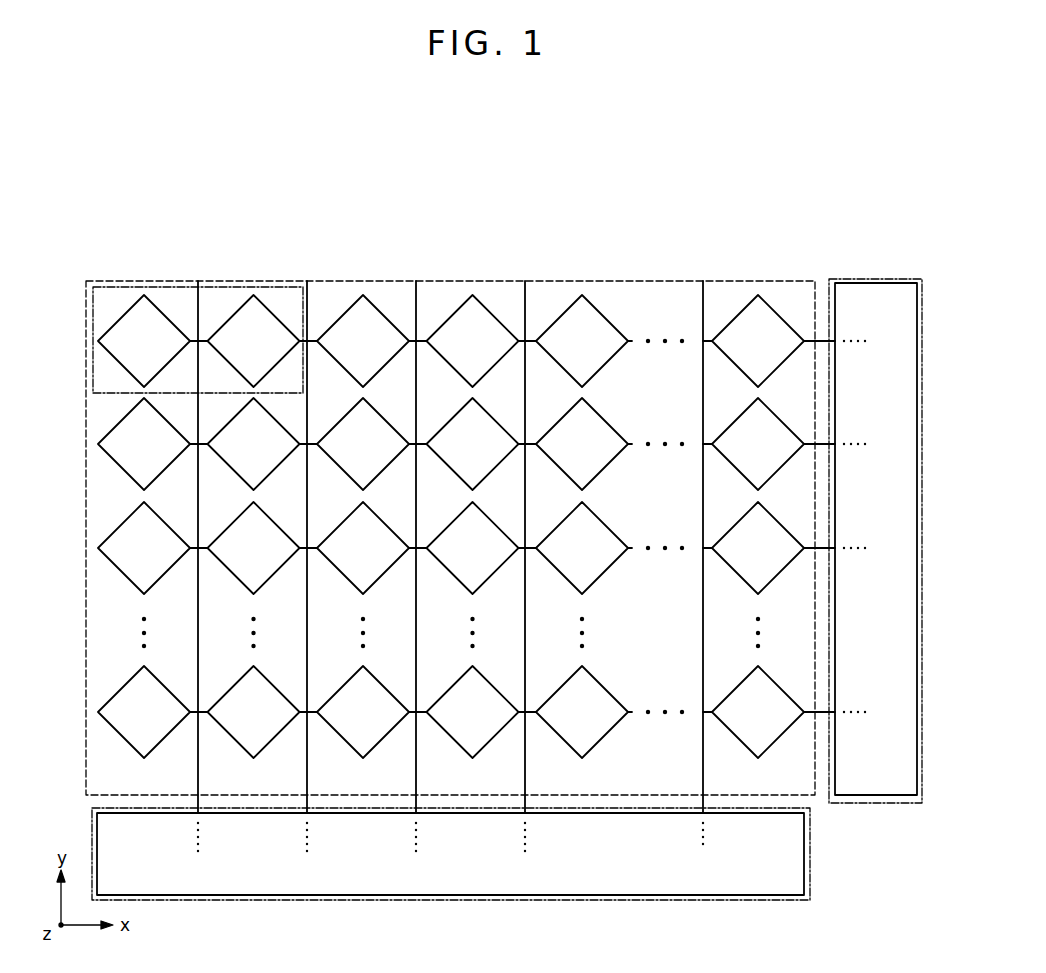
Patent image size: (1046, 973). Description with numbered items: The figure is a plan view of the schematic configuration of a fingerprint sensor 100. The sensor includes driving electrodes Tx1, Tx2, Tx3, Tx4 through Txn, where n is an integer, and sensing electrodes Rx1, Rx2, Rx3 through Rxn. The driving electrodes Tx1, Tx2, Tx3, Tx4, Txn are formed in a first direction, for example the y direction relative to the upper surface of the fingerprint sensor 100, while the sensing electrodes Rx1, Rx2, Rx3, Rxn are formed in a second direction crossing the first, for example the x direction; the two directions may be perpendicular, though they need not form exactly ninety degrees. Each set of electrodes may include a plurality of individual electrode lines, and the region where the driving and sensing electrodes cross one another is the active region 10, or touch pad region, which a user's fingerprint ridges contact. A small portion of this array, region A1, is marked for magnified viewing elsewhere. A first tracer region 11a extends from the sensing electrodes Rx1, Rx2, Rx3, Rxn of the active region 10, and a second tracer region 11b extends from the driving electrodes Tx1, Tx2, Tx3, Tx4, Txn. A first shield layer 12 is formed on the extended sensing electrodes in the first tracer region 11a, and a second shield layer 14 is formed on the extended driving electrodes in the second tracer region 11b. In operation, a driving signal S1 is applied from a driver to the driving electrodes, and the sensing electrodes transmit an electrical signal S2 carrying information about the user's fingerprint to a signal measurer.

The fingerprint sensor 100 is at (803, 198).
The active region 10 is at (623, 280).
The first shield layer 12 is at (855, 282).
The first tracer region 11a is at (912, 282).
The second tracer region 11b is at (478, 903).
The second shield layer 14 is at (806, 855).
The driving signal S1 is at (703, 852).
The electrical signal S2 is at (875, 343).
The region A1 is at (107, 285).
The driving electrode Tx1 is at (197, 532).
The driving electrode Tx2 is at (306, 532).
The driving electrode Tx3 is at (415, 532).
The driving electrode Tx4 is at (524, 532).
The driving electrode Txn is at (702, 532).
The sensing electrode Rx1 is at (440, 342).
The sensing electrode Rx2 is at (440, 445).
The sensing electrode Rx3 is at (440, 549).
The sensing electrode Rxn is at (440, 713).